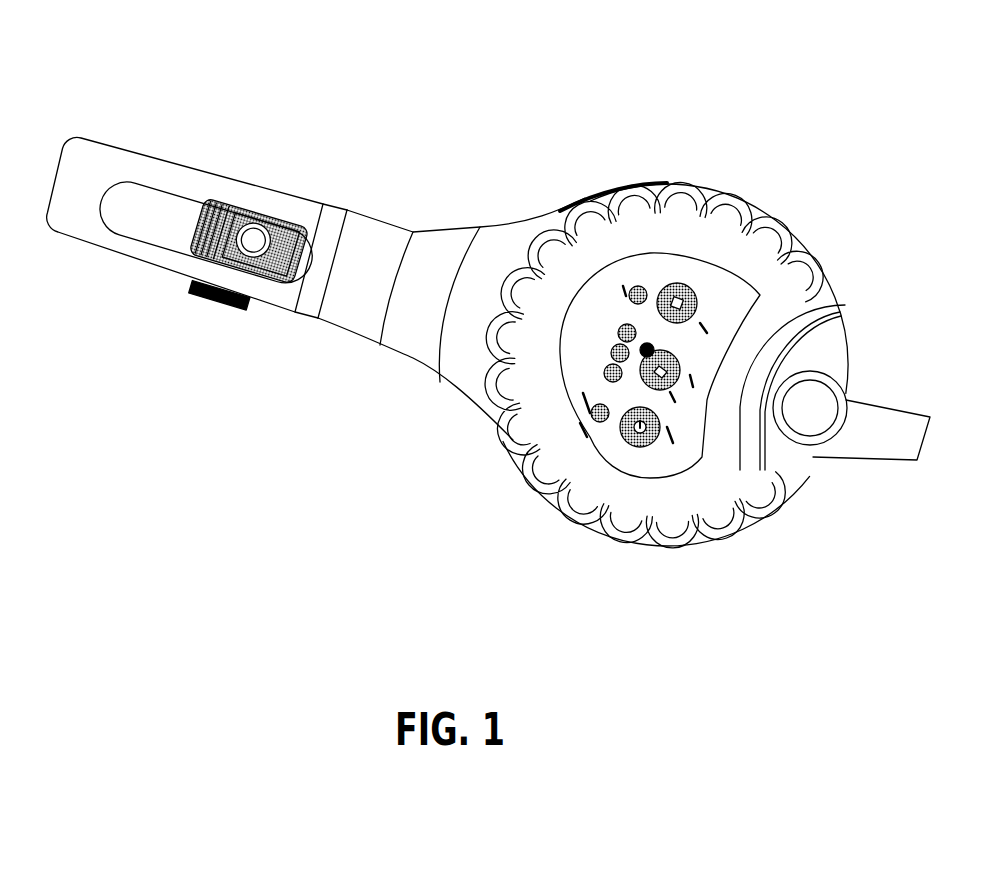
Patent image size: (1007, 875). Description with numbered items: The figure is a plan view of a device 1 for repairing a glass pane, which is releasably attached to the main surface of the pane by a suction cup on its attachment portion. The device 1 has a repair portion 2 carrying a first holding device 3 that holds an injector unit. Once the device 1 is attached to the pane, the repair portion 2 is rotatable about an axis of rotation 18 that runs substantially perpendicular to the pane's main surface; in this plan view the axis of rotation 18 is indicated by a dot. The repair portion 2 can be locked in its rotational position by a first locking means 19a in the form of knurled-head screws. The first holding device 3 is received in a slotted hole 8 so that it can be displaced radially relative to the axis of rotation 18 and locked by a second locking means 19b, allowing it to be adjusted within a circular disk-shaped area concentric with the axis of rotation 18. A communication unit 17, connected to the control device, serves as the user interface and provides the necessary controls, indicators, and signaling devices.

The device 1 is at (443, 110).
The repair portion 2 is at (72, 117).
The slotted hole 8 is at (143, 217).
The first holding device 3 is at (227, 257).
The second locking means 19b is at (213, 307).
The first locking means 19a is at (717, 180).
The communication unit 17 is at (697, 277).
The axis of rotation 18 is at (662, 338).